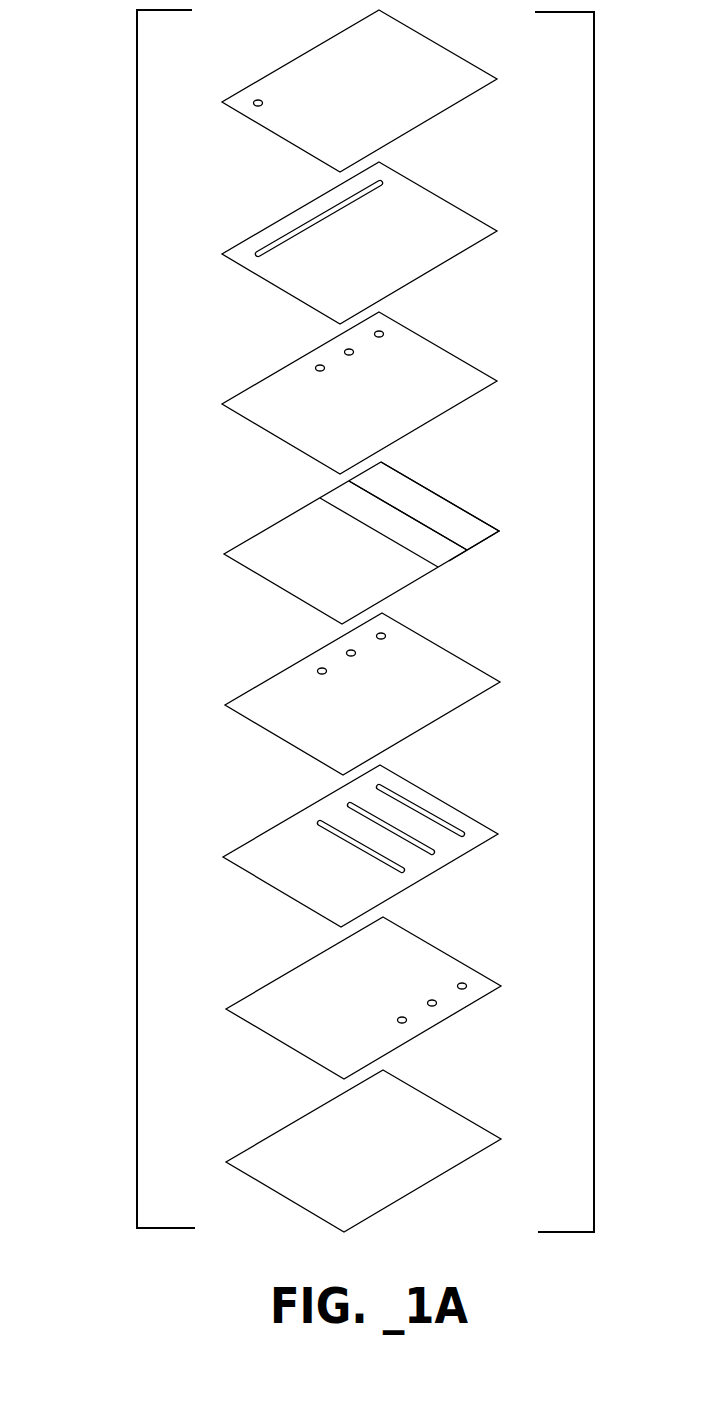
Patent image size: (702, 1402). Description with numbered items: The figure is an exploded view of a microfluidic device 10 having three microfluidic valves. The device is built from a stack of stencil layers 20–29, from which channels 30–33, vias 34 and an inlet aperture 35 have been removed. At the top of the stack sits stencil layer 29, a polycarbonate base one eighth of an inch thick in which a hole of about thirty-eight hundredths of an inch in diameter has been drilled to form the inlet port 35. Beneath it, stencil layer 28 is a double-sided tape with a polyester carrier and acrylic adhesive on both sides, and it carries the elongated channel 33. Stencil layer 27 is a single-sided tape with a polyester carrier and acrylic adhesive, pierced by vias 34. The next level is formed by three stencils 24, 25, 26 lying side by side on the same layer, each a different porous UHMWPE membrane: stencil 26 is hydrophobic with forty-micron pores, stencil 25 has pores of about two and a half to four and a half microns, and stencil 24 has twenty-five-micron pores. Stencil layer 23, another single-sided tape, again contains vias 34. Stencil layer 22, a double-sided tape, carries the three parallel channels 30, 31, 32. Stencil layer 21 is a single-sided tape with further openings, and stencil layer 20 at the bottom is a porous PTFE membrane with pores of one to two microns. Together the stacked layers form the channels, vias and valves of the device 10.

The microfluidic device 10 is at (124, 680).
The stencil layer 20 is at (477, 1130).
The stencil layer 21 is at (477, 985).
The stencil layer 22 is at (473, 832).
The stencil layer 23 is at (473, 678).
The stencil 24 is at (450, 560).
The stencil 25 is at (473, 528).
The stencil 26 is at (275, 522).
The stencil layer 27 is at (468, 370).
The stencil layer 28 is at (472, 228).
The stencil layer 29 is at (475, 73).
The channel 30 is at (318, 822).
The channel 31 is at (348, 805).
The channel 32 is at (402, 795).
The channel 33 is at (278, 238).
The vias 34 is at (317, 365).
The inlet aperture 35 is at (255, 100).